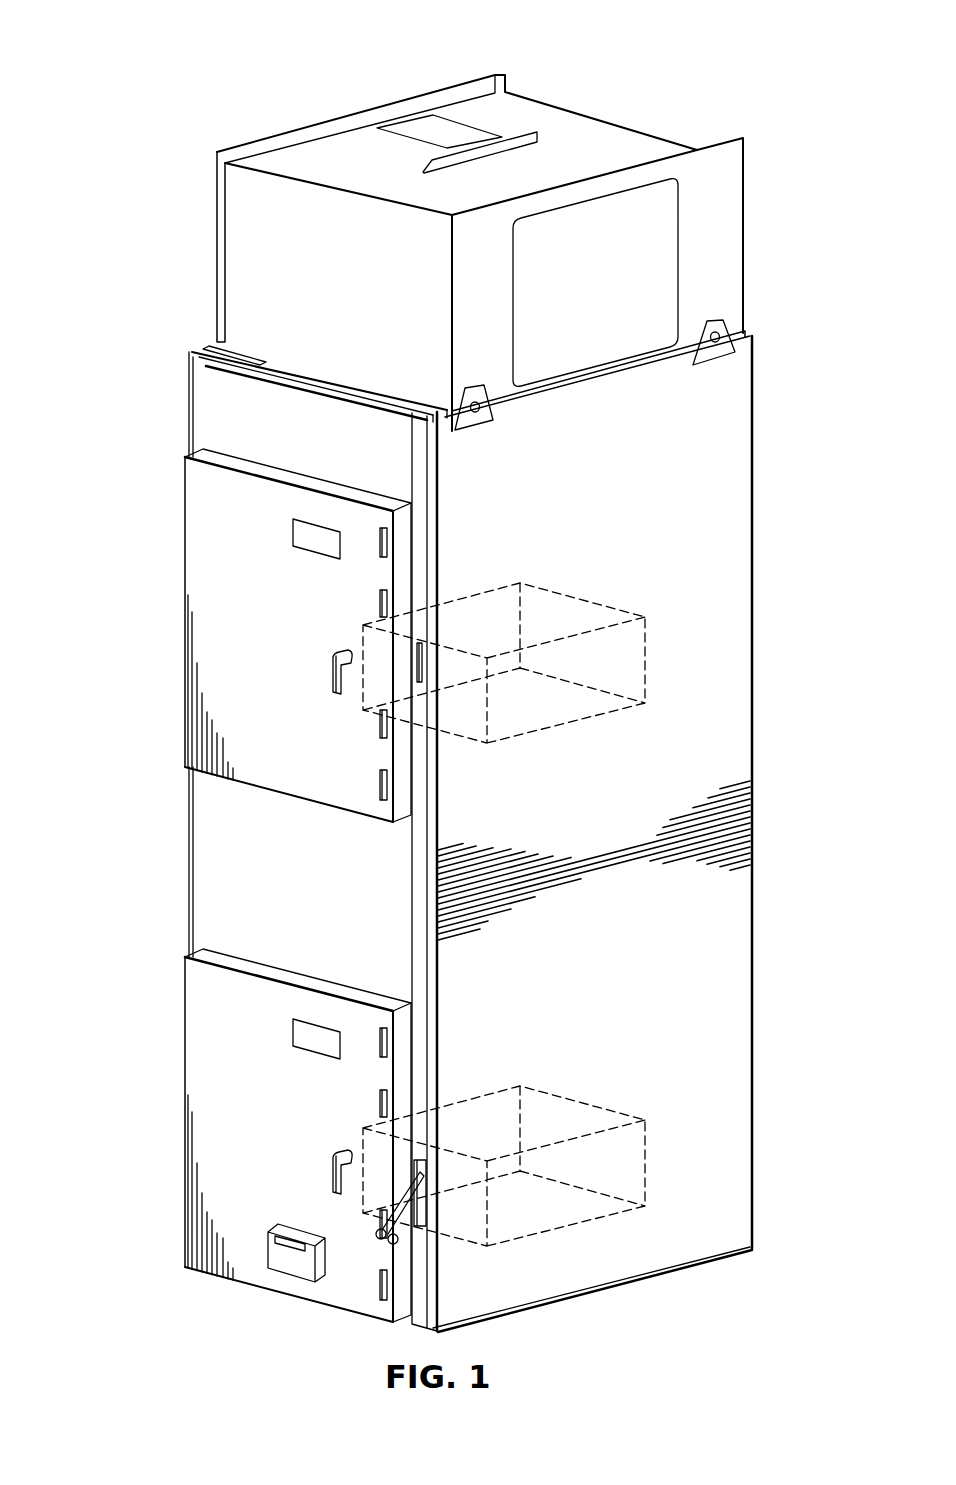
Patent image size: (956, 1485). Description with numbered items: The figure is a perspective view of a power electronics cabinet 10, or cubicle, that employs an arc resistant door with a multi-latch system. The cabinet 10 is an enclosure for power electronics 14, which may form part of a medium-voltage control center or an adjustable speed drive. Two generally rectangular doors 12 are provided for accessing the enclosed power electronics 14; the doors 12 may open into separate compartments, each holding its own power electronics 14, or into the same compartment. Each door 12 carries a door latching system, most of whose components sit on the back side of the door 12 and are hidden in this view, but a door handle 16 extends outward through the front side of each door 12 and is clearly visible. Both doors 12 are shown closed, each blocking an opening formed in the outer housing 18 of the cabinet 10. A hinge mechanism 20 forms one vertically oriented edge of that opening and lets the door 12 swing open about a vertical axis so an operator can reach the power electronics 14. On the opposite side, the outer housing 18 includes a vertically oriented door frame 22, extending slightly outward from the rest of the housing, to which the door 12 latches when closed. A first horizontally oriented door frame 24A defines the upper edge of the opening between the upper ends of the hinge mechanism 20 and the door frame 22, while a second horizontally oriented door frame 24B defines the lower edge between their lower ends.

The power electronics cabinet 10 is at (251, 71).
The door 12 is at (204, 504).
The power electronics 14 is at (648, 658).
The door handle 16 is at (333, 673).
The outer housing 18 is at (355, 406).
The hinge mechanism 20 is at (182, 599).
The vertically oriented door frame 22 is at (410, 547).
The first horizontally oriented door frame 24A is at (290, 478).
The second horizontally oriented door frame 24B is at (266, 790).